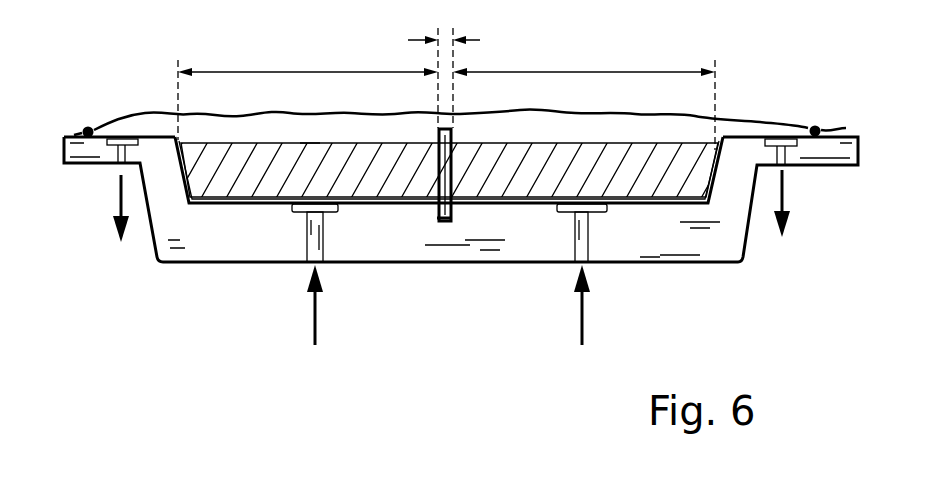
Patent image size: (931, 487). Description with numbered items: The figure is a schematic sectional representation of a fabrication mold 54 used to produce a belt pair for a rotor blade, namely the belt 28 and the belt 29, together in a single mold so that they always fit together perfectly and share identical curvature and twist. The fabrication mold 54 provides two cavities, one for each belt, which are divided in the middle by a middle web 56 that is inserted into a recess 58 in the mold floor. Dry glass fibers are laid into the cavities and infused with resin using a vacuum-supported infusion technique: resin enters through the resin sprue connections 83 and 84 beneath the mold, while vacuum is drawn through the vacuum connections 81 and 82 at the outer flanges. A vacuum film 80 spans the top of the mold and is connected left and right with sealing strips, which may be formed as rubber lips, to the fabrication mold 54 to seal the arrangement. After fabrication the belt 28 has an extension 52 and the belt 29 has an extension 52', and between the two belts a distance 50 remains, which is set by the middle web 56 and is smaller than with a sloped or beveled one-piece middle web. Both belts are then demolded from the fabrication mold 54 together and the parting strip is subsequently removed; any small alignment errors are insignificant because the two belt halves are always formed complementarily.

The belt 28 is at (260, 163).
The belt 29 is at (517, 165).
The distance 50 is at (480, 40).
The extension 52 is at (308, 79).
The extension 52' is at (584, 84).
The fabrication mold 54 is at (683, 250).
The middle web 56 is at (511, 119).
The recess 58 is at (414, 284).
The vacuum film 80 is at (748, 112).
The vacuum connection 81 is at (118, 150).
The vacuum connection 82 is at (792, 154).
The resin sprue connection 83 is at (312, 238).
The resin sprue connection 84 is at (583, 235).